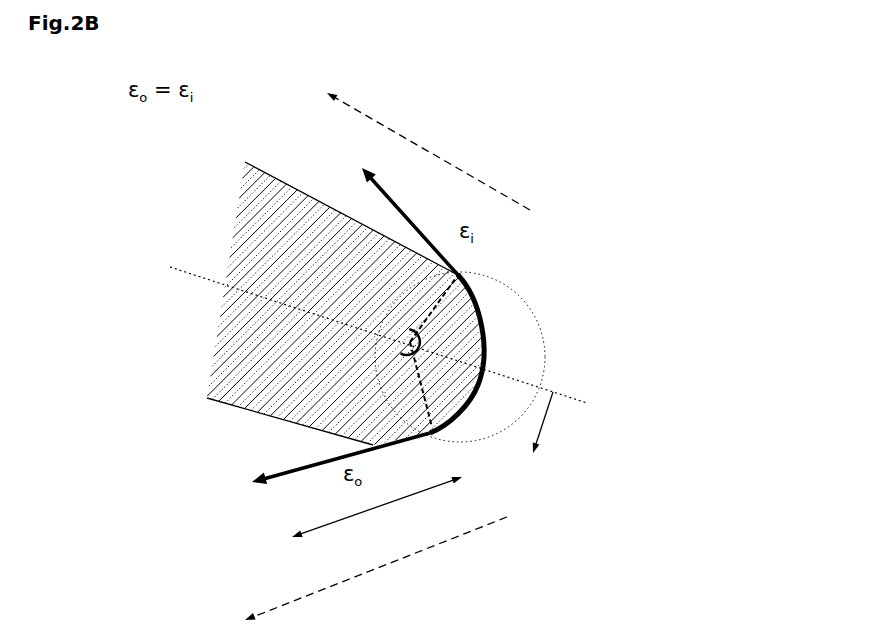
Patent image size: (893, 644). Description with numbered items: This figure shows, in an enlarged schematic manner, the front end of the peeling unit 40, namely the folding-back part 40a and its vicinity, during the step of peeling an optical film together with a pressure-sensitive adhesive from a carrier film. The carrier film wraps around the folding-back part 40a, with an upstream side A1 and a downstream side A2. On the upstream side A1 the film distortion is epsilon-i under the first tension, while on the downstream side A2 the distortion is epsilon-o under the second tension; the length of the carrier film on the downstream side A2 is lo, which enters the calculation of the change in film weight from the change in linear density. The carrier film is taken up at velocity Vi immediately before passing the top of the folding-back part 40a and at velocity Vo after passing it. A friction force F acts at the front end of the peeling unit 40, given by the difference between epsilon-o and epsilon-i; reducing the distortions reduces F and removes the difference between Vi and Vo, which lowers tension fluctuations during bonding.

The peeling unit 40 is at (240, 240).
The folding-back part 40a is at (537, 318).
The friction force F is at (466, 275).
The take-up velocity downstream of the folding-back part Vo is at (318, 468).
The take-up velocity upstream of the folding-back part Vi is at (548, 430).
The upstream side A1 is at (428, 151).
The downstream side A2 is at (376, 568).
The length of the carrier film downstream of the folding-back part lo is at (377, 510).